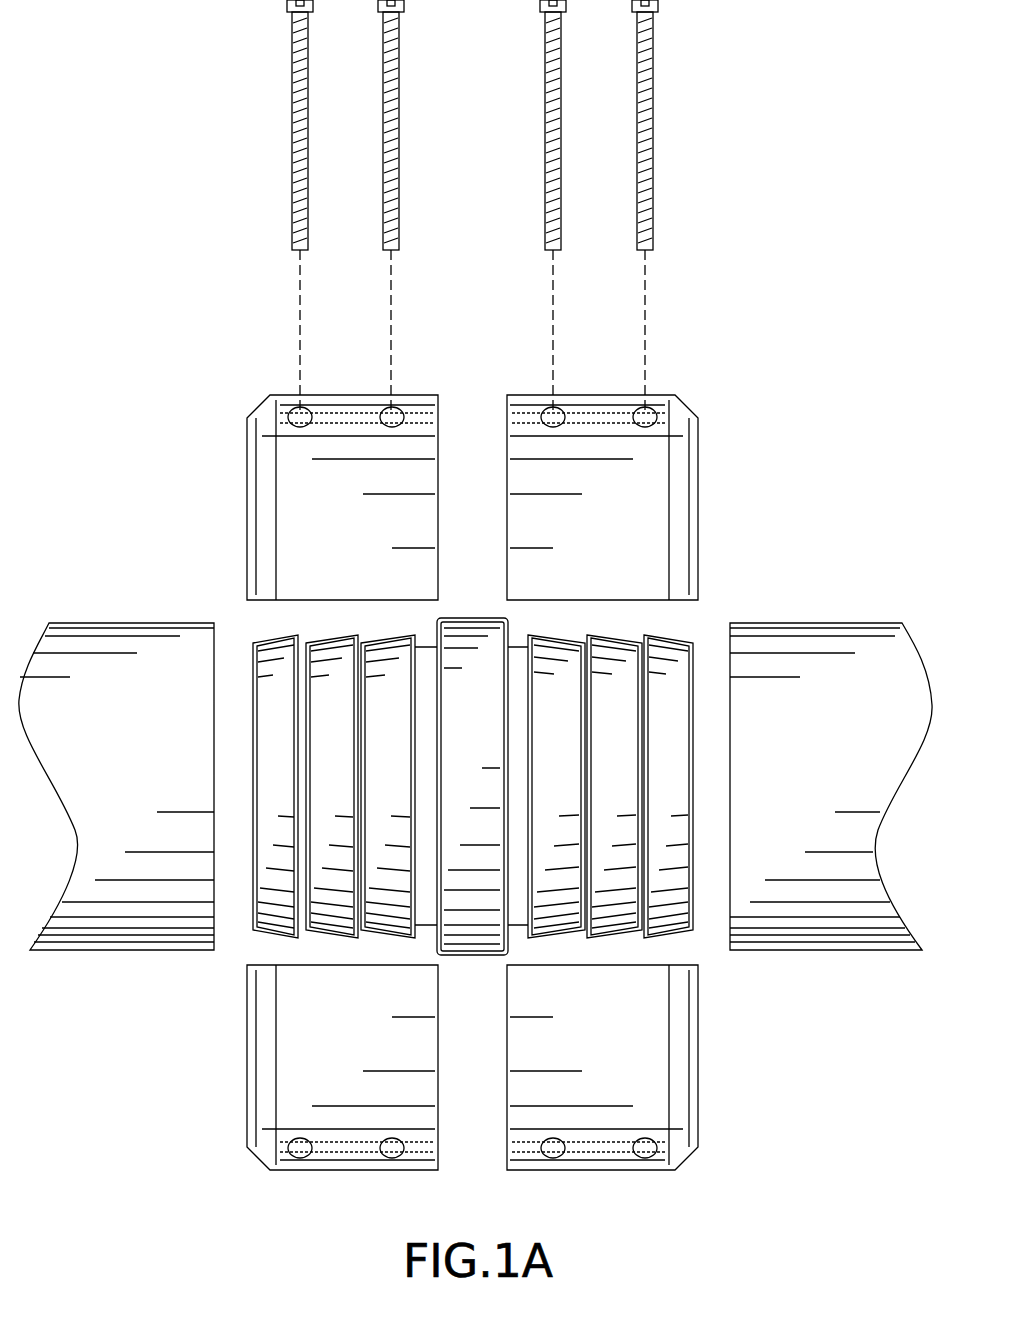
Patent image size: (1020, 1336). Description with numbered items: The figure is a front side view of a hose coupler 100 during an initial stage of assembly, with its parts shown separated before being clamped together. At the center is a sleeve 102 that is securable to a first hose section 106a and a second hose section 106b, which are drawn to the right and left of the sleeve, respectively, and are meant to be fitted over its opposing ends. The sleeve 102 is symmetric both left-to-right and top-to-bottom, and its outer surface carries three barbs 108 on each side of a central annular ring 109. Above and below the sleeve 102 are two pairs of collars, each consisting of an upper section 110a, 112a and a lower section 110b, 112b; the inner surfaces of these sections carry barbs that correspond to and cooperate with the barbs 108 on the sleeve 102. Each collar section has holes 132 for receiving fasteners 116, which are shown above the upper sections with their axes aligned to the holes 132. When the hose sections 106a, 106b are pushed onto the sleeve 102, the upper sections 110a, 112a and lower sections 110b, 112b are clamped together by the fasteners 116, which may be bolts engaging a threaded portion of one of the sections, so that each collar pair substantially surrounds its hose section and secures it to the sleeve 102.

The hose coupler 100 is at (166, 157).
The sleeve 102 is at (523, 760).
The first hose section 106a is at (858, 622).
The second hose section 106b is at (95, 622).
The barbs 108 is at (665, 648).
The annular ring 109 is at (470, 640).
The upper section 110a is at (683, 418).
The lower section 110b is at (690, 1160).
The upper section 112a is at (265, 442).
The lower section 112b is at (246, 1146).
The fasteners 116 is at (308, 78).
The holes 132 is at (548, 410).